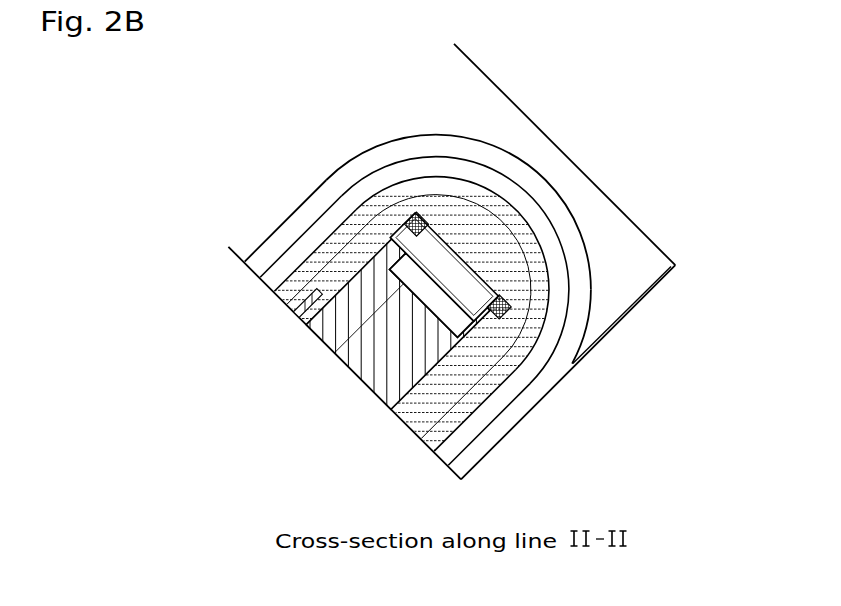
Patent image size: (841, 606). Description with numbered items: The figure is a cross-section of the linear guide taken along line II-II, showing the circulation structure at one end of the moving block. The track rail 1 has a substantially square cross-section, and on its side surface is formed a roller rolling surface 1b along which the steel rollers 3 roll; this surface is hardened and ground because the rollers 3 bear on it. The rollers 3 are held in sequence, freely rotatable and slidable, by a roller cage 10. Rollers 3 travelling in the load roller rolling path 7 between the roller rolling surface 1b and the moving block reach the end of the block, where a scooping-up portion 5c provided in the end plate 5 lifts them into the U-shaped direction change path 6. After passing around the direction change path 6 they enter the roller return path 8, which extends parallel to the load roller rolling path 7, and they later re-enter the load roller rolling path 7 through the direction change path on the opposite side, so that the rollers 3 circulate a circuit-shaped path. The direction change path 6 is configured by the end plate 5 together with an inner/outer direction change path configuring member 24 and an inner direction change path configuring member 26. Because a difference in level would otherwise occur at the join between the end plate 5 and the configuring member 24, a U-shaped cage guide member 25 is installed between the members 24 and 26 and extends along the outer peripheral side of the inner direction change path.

The track rail 1 is at (617, 337).
The roller rolling surfaces 1b is at (528, 399).
The rollers 3 is at (458, 274).
The end plate 5 is at (498, 120).
The scooping-up portion 5c is at (597, 328).
The direction change path 6 is at (508, 163).
The load roller rolling path 7 is at (500, 425).
The roller return path 8 is at (307, 218).
The roller cage 10 is at (483, 278).
The inner/outer direction change path configuring member 24 is at (453, 418).
The cage guide member 25 is at (410, 227).
The inner direction change path configuring member 26 is at (340, 298).